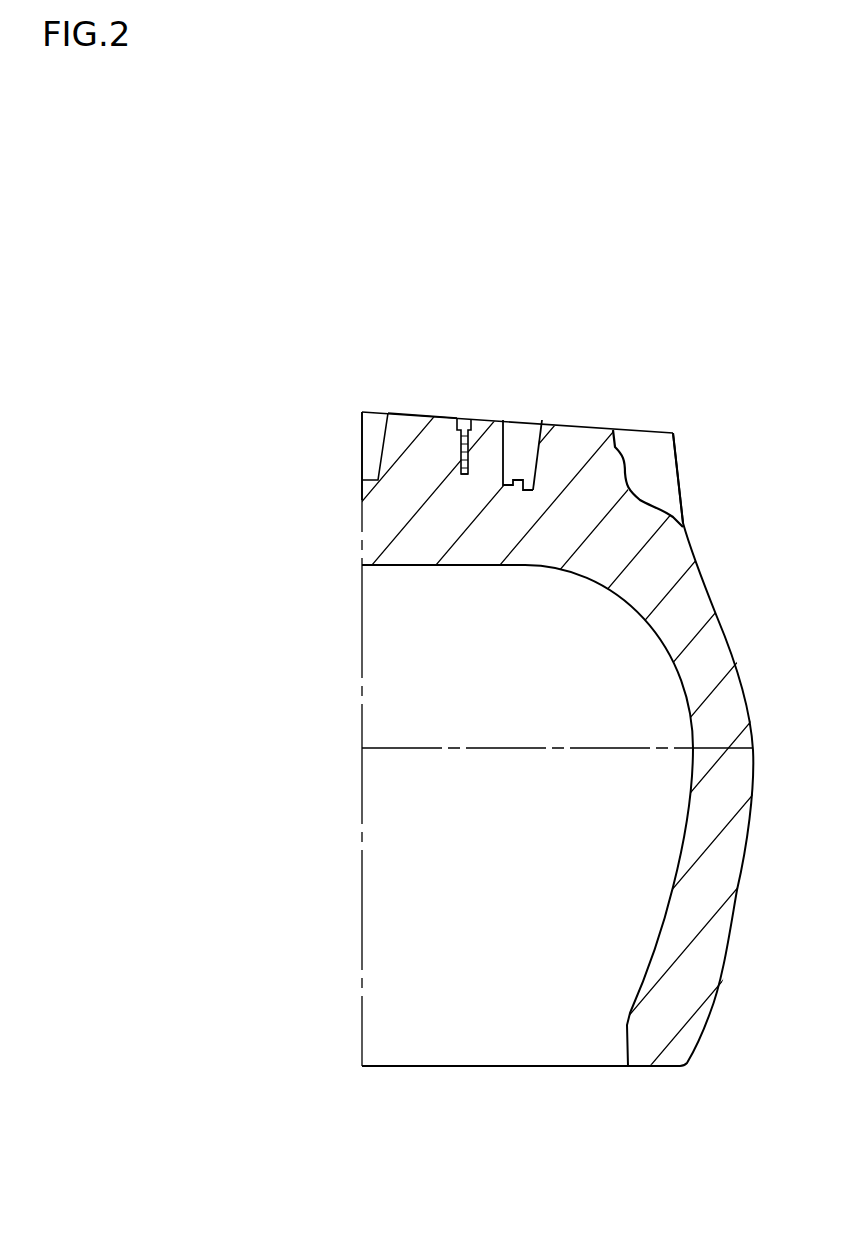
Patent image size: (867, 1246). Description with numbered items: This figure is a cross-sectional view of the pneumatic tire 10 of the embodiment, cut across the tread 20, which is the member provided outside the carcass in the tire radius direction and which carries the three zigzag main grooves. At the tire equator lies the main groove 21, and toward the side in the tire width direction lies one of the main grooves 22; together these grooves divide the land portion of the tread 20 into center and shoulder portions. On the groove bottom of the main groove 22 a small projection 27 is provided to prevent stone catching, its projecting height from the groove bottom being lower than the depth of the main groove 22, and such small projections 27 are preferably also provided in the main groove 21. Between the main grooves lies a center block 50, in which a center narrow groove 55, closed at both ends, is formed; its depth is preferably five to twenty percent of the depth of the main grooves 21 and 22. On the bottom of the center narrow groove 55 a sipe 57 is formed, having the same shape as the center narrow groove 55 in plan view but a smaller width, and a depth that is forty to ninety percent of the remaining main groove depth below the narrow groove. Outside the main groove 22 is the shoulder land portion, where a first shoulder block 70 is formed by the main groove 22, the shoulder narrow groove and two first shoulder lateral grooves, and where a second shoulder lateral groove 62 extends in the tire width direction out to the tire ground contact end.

The pneumatic tire 10 is at (518, 253).
The tread 20 is at (600, 480).
The main groove 21 is at (373, 425).
The main groove 22 is at (536, 437).
The small projection 27 is at (523, 438).
The center block 50 is at (430, 430).
The center narrow groove 55 is at (464, 418).
The sipe 57 is at (460, 460).
The second shoulder lateral groove 62 is at (652, 448).
The first shoulder block 70 is at (585, 447).